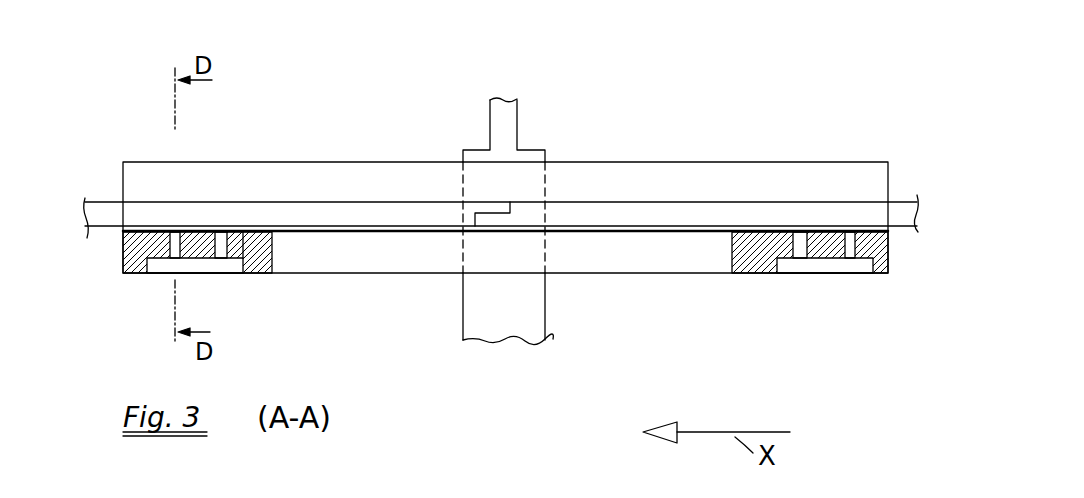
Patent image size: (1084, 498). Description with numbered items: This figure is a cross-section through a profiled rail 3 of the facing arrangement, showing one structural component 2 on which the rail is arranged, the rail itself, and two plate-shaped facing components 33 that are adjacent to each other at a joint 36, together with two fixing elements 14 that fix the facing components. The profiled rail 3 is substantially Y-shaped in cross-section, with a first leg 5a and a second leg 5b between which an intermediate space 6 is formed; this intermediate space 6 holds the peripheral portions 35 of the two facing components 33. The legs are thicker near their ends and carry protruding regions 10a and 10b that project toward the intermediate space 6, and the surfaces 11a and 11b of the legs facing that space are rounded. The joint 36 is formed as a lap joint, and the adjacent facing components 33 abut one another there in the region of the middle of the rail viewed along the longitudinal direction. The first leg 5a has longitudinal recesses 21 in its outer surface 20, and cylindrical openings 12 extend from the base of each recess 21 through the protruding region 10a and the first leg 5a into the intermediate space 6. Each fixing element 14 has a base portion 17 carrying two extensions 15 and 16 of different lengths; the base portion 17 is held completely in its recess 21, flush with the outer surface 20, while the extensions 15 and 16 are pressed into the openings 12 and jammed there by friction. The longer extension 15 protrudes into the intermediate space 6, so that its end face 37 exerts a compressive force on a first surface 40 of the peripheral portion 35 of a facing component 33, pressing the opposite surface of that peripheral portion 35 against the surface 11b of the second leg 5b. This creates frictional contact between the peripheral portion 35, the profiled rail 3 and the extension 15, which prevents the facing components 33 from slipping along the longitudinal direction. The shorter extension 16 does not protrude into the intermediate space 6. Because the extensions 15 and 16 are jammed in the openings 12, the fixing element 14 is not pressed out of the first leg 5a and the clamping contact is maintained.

The structural component 2 is at (510, 132).
The profiled rail 3 is at (393, 162).
The first leg 5a is at (427, 262).
The second leg 5b is at (341, 190).
The intermediate space 6 is at (896, 231).
The protruding region 10a is at (352, 252).
The protruding region 10b is at (193, 190).
The surface 11a is at (613, 229).
The surface 11b is at (776, 211).
The openings 12 is at (178, 232).
The fixing element 14 is at (230, 265).
The extension 15 is at (168, 272).
The extension 16 is at (203, 262).
The base portion 17 is at (193, 264).
The outer surface 20 is at (591, 275).
The longitudinal recess 21 is at (242, 270).
The plate-shaped facing component 33 is at (307, 210).
The peripheral portion 35 is at (735, 217).
The joint 36 is at (495, 198).
The end face 37 is at (172, 224).
The first surface 40 is at (280, 233).